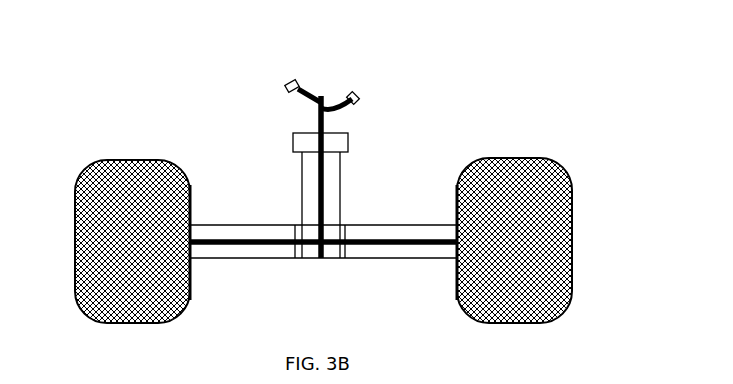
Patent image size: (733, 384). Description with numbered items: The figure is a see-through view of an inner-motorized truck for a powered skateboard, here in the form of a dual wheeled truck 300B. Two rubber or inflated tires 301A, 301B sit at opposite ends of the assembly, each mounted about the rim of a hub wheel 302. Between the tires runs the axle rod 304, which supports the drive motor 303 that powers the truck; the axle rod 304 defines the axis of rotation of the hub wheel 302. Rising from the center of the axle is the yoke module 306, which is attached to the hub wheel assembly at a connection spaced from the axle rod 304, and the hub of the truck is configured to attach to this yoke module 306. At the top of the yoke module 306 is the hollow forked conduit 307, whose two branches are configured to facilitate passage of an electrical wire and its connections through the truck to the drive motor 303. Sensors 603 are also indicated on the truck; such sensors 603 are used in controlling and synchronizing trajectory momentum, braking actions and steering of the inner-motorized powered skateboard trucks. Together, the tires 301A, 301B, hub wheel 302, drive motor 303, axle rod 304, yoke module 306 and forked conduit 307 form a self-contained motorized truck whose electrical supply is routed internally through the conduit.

The dual wheeled truck 300B is at (241, 44).
The tire 301A is at (172, 322).
The tire 301B is at (478, 318).
The hub wheel 302 is at (196, 242).
The drive motor 303 is at (452, 242).
The axle rod 304 is at (272, 197).
The sensors 603 is at (303, 156).
The yoke module 306 is at (326, 133).
The hollow forked conduit 307 is at (320, 96).